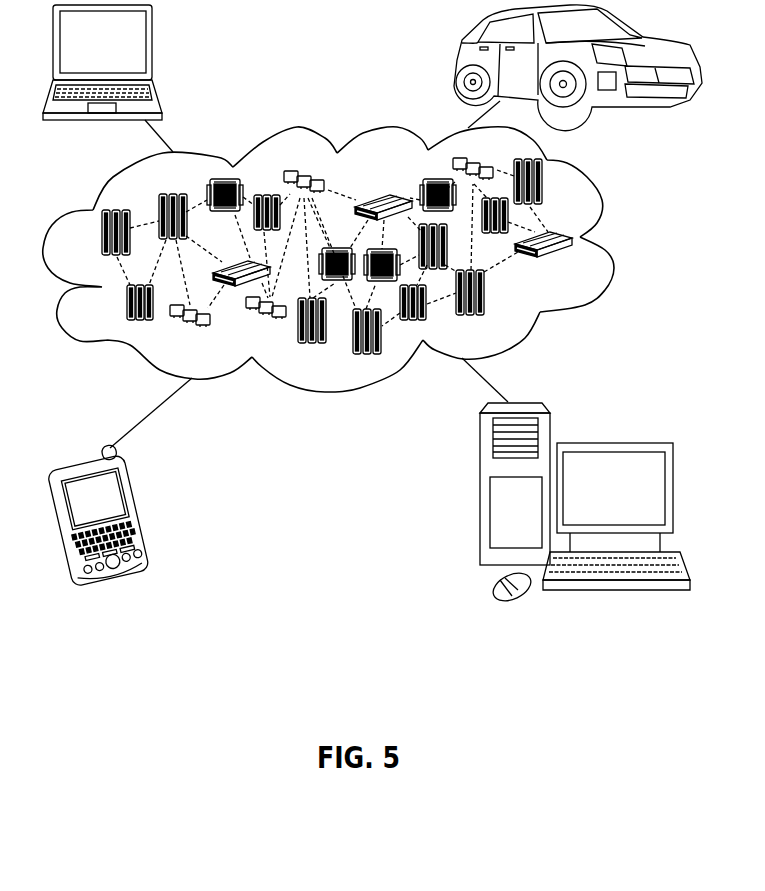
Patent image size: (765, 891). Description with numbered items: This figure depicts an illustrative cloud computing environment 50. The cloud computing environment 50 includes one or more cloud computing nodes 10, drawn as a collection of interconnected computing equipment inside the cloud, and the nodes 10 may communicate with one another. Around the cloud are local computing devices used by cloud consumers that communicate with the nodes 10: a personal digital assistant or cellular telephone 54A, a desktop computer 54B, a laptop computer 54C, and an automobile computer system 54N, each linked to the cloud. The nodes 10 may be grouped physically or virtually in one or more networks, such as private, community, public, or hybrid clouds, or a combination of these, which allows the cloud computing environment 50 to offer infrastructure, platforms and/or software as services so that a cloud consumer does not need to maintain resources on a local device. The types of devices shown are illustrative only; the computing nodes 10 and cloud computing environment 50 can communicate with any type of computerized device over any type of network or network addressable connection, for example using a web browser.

The cloud computing node 10 is at (577, 268).
The cloud computing environment 50 is at (613, 243).
The personal digital assistant or cellular telephone 54A is at (143, 508).
The desktop computer 54B is at (620, 432).
The laptop computer 54C is at (153, 50).
The automobile computer system 54N is at (462, 58).